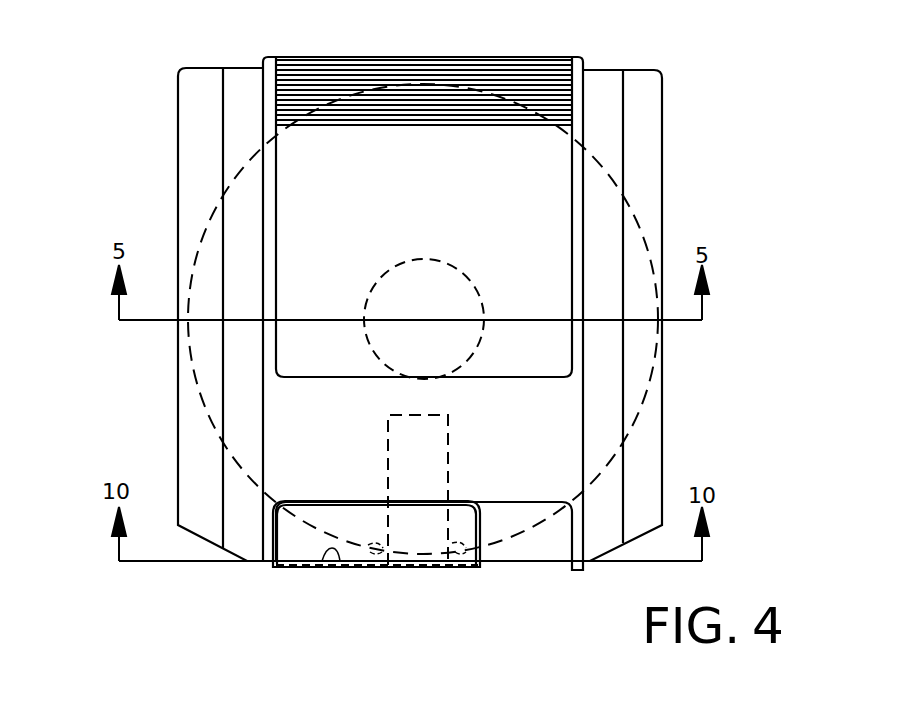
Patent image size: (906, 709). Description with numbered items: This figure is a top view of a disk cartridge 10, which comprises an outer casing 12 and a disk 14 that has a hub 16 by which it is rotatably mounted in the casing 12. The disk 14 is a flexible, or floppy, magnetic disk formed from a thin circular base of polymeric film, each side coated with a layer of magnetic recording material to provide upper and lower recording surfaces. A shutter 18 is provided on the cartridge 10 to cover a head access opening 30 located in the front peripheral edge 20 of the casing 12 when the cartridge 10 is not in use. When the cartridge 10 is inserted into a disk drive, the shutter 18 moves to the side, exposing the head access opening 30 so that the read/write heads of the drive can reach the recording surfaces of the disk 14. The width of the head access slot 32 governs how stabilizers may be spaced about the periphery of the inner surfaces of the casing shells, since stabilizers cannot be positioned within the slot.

The disk cartridge 10 is at (167, 135).
The outer casing 12 is at (610, 70).
The disk 14 is at (642, 408).
The hub 16 is at (423, 280).
The shutter 18 is at (303, 570).
The front peripheral edge 20 is at (494, 570).
The head access opening 30 is at (411, 570).
The head access slot 32 is at (452, 416).